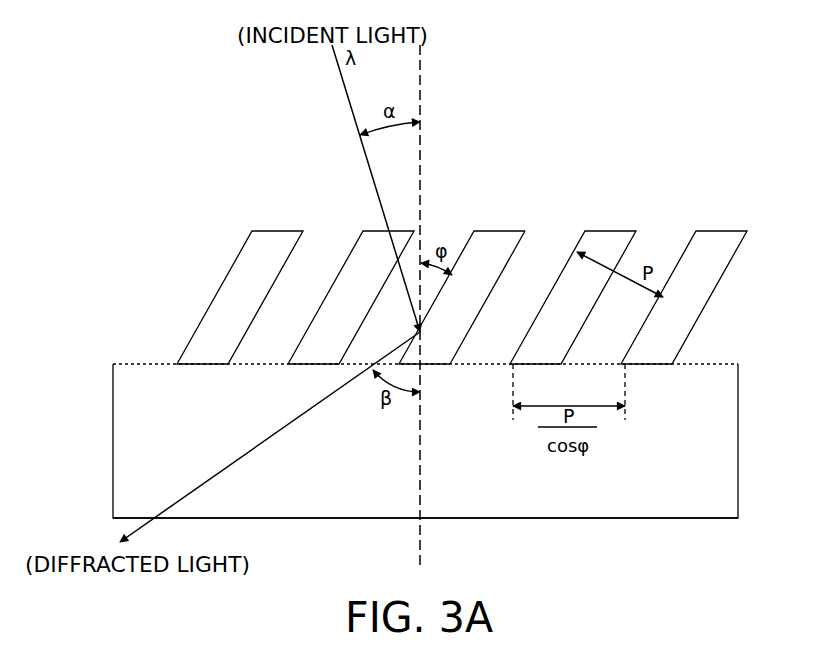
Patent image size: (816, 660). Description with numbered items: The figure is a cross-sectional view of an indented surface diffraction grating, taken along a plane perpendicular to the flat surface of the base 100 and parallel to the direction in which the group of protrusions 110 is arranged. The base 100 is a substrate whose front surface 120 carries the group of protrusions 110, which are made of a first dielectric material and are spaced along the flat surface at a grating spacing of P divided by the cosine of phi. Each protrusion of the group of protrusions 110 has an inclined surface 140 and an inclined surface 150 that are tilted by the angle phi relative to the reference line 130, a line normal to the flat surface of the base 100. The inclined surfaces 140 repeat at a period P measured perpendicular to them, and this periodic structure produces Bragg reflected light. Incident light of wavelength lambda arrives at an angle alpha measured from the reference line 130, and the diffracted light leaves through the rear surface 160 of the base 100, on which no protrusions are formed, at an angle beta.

The base 100 is at (117, 415).
The group of protrusions 110 is at (465, 254).
The front surface 120 is at (143, 364).
The reference line 130 is at (420, 63).
The inclined surface 140 is at (482, 276).
The inclined surface 150 is at (515, 250).
The rear surface 160 is at (330, 519).